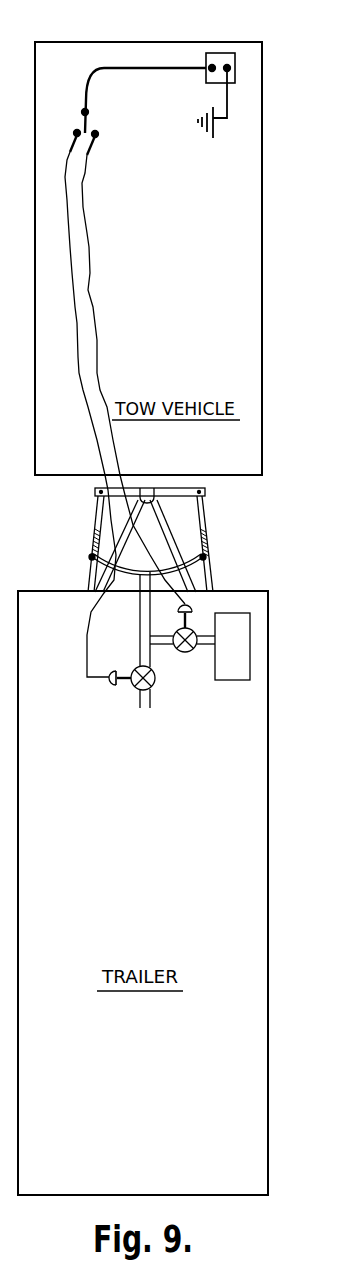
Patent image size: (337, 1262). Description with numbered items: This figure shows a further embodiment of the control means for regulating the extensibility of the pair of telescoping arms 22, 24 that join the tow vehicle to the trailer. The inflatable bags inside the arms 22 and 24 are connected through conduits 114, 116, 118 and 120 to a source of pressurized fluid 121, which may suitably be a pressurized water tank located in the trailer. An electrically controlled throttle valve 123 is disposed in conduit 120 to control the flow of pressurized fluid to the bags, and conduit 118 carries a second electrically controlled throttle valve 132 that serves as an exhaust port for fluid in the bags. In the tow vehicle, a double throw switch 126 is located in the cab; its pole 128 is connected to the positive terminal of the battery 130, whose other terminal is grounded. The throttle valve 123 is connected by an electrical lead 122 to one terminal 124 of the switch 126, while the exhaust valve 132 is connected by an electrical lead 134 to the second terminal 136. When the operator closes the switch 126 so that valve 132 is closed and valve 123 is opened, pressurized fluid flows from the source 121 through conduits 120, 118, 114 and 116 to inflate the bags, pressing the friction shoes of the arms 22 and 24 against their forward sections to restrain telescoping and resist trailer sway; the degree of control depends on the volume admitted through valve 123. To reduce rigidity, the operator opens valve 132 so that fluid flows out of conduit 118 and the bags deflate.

The battery 130 is at (220, 52).
The pole 128 is at (90, 112).
The second terminal 136 is at (76, 130).
The terminal 124 is at (98, 136).
The double throw switch 126 is at (94, 152).
The electrical lead 122 is at (99, 360).
The electrical lead 134 is at (78, 374).
The arm 22 is at (90, 548).
The arm 24 is at (207, 550).
The conduit 114 is at (112, 566).
The conduit 116 is at (203, 573).
The conduit 118 is at (139, 616).
The source of pressurized fluid 121 is at (248, 642).
The conduit 120 is at (205, 650).
The electrically controlled throttle valve 123 is at (196, 652).
The second electrically controlled throttle valve 132 is at (131, 690).